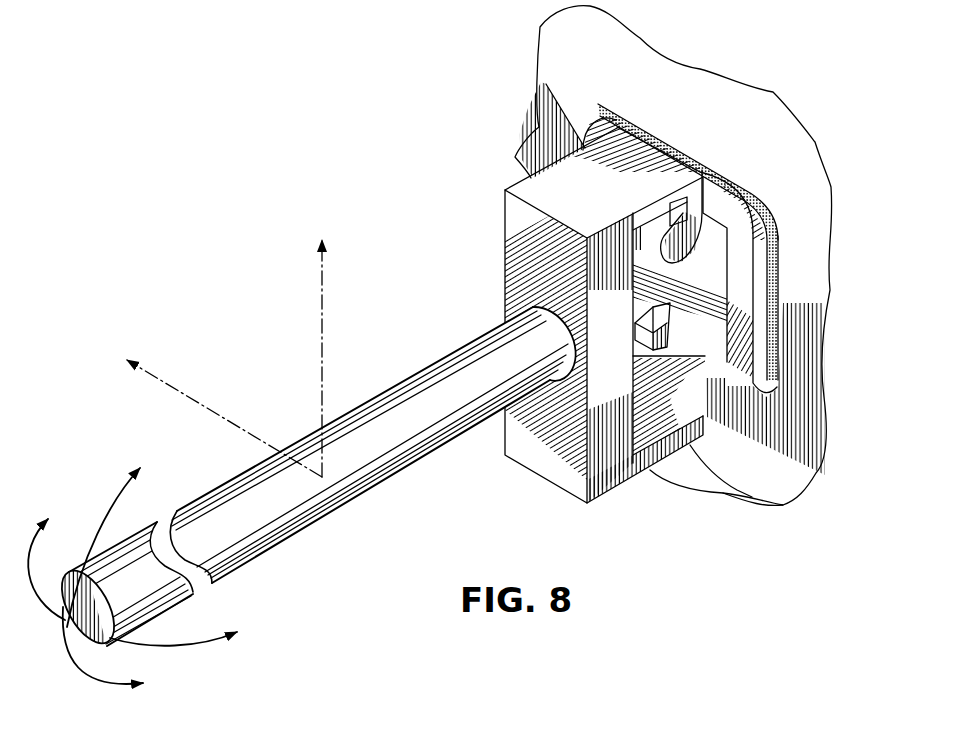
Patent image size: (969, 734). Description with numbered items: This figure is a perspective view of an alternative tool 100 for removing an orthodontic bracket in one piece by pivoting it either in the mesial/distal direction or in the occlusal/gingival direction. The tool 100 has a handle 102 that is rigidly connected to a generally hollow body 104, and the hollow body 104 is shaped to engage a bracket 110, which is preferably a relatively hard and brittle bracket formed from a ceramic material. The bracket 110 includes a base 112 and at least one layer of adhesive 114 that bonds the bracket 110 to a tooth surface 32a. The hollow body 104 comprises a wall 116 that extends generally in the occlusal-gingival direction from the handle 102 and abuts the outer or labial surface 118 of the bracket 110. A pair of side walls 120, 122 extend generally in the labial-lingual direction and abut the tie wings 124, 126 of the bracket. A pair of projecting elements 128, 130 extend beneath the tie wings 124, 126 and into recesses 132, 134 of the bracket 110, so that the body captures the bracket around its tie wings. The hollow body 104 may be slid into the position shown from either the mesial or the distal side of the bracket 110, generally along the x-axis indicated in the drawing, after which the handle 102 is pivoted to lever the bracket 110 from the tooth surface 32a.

The tooth surface 32a is at (763, 107).
The tool 100 is at (437, 243).
The handle 102 is at (296, 536).
The hollow body 104 is at (516, 186).
The bracket 110 is at (707, 333).
The base 112 is at (775, 212).
The layer of adhesive 114 is at (736, 195).
The wall 116 is at (610, 450).
The labial surface 118 is at (630, 297).
The side wall 120 is at (590, 190).
The side wall 122 is at (787, 493).
The tie wing 124 is at (672, 222).
The tie wing 126 is at (705, 358).
The projecting element 128 is at (685, 255).
The projecting element 130 is at (678, 398).
The recess 132 is at (663, 250).
The recess 134 is at (683, 402).